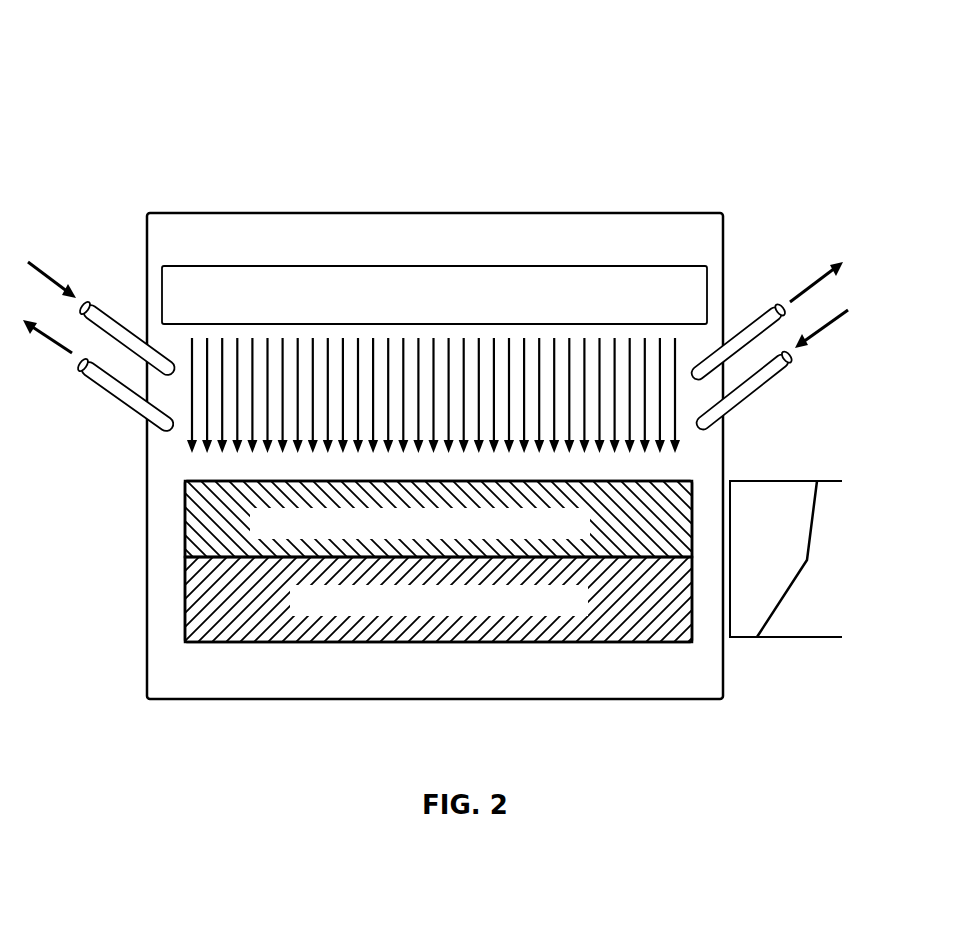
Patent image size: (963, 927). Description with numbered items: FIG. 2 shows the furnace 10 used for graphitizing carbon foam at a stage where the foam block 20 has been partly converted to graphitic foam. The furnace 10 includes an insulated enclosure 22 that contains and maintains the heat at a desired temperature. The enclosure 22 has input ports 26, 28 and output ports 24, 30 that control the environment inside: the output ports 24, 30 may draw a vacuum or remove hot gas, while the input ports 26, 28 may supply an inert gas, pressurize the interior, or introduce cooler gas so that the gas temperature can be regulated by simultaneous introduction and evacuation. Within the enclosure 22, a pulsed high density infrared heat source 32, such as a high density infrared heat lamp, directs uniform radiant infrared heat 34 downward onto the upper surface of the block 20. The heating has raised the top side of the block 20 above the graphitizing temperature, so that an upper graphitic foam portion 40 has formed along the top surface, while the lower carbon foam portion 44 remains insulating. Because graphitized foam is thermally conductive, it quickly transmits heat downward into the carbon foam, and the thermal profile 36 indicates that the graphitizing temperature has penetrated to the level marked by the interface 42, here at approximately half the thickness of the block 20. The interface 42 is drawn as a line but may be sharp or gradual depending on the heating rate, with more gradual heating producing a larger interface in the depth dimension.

The furnace 10 is at (462, 157).
The carbon foam block 20 is at (320, 668).
The insulated enclosure 22 is at (502, 211).
The output port 24 is at (750, 335).
The input port 26 is at (113, 330).
The input port 28 is at (728, 403).
The output port 30 is at (122, 388).
The pulsed high density infrared heat source 32 is at (341, 272).
The radiant infrared heat 34 is at (603, 400).
The thermal profile 36 is at (853, 446).
The graphitic foam portion 40 is at (197, 517).
The interface 42 is at (198, 557).
The carbon foam portion 44 is at (197, 625).